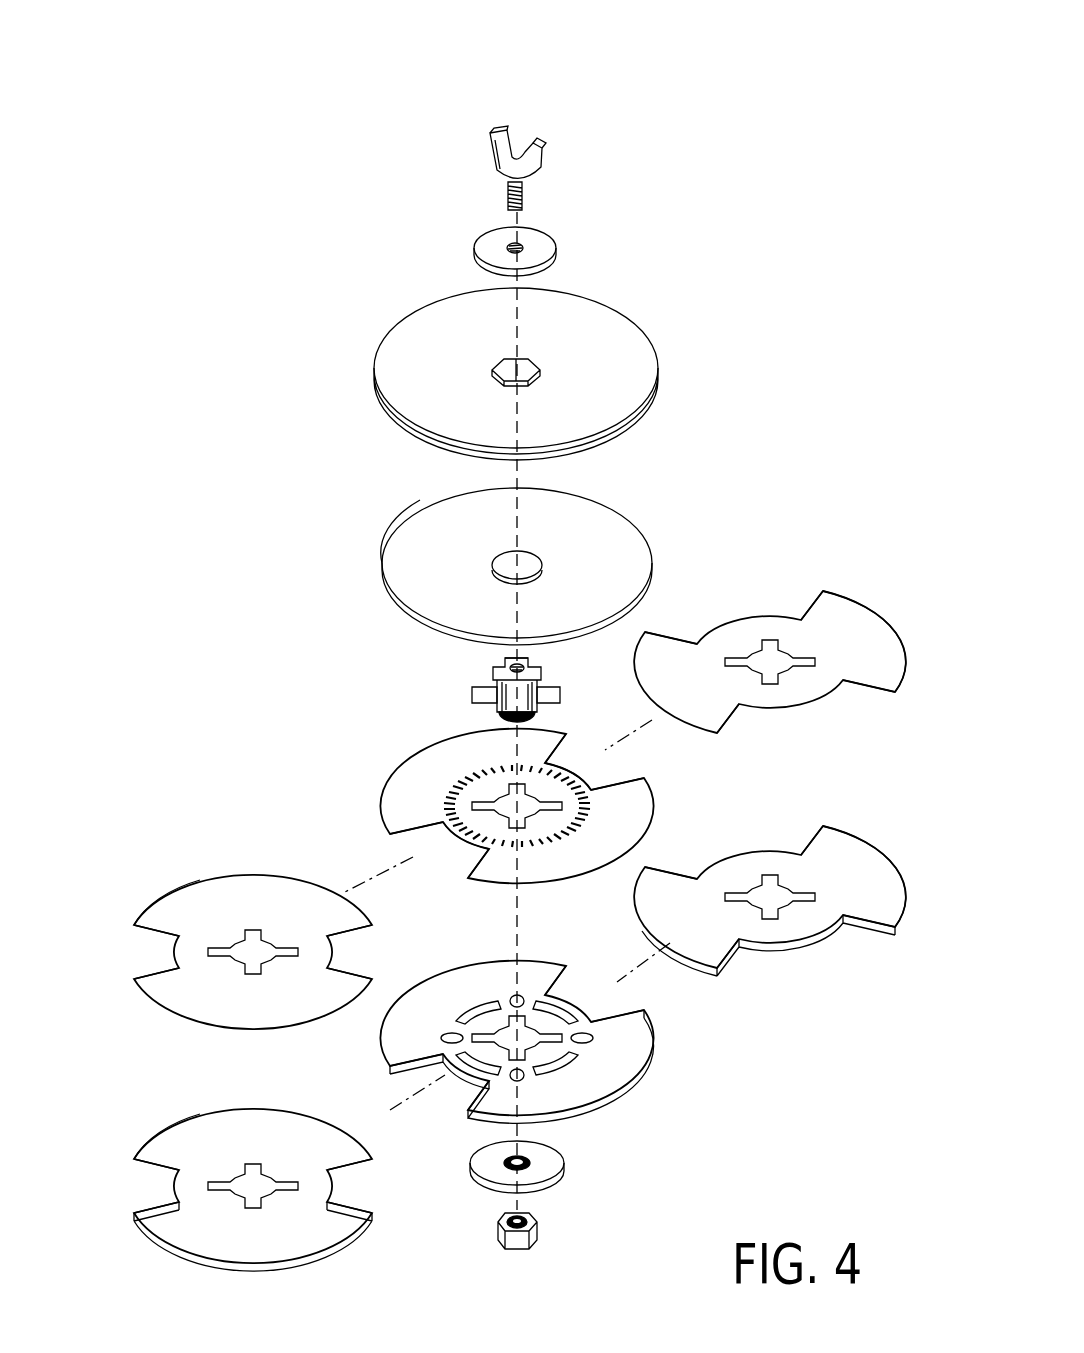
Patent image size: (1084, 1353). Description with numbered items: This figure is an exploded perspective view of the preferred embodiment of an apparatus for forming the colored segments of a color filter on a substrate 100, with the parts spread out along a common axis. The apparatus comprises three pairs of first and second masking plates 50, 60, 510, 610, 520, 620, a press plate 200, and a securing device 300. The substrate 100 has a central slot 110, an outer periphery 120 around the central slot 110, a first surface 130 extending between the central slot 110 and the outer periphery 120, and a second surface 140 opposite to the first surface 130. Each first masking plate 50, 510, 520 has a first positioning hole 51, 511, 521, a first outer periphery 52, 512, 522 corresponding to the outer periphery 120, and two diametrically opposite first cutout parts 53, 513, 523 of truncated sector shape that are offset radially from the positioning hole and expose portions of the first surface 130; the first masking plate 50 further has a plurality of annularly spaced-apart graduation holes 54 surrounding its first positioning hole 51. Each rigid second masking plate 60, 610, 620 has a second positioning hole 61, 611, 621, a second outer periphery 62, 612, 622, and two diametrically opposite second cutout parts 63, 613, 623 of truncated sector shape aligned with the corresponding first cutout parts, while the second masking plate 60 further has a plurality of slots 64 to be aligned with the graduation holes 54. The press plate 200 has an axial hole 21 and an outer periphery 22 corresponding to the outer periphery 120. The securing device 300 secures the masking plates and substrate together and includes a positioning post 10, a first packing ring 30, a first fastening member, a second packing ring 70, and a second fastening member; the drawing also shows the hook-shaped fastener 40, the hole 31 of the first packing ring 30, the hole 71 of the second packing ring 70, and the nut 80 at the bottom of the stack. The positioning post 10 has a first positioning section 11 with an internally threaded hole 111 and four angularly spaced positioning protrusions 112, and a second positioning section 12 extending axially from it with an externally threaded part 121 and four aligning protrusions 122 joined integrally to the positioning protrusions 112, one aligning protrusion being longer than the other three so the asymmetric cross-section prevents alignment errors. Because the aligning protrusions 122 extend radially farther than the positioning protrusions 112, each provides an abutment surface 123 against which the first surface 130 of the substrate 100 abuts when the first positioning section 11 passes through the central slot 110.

The securing device 300 is at (489, 104).
The hook 40 is at (530, 123).
The first packing ring 30 is at (536, 237).
The washer hole 31 is at (515, 248).
The press plate 200 is at (553, 373).
The axial hole 21 is at (498, 363).
The outer periphery 22 is at (660, 372).
The substrate 100 is at (488, 547).
The central slot 110 is at (498, 555).
The outer periphery 120 is at (605, 508).
The first surface 130 is at (406, 613).
The second surface 140 is at (408, 568).
The positioning post 10 is at (509, 663).
The first positioning section 11 is at (535, 660).
The internally threaded hole 111 is at (496, 660).
The positioning protrusions 112 is at (488, 670).
The abutment surface 123 is at (474, 690).
The aligning protrusions 122 is at (560, 698).
The externally threaded part 121 is at (500, 712).
The second positioning section 12 is at (540, 712).
The first masking plate 50 is at (467, 834).
The first positioning hole 51 is at (498, 800).
The first outer periphery 52 is at (378, 810).
The first cutout parts 53 is at (590, 778).
The graduation holes 54 is at (460, 838).
The first masking plate 510 is at (250, 899).
The first positioning hole 511 is at (245, 948).
The first outer periphery 512 is at (136, 906).
The first cutout parts 513 is at (148, 955).
The first masking plate 520 is at (789, 606).
The first positioning hole 521 is at (778, 655).
The first outer periphery 522 is at (892, 625).
The first cutout parts 523 is at (732, 617).
The second masking plate 620 is at (788, 895).
The second positioning hole 621 is at (774, 893).
The second outer periphery 622 is at (830, 850).
The second cutout parts 623 is at (705, 862).
The second masking plate 60 is at (553, 1054).
The second positioning hole 61 is at (542, 1050).
The second outer periphery 62 is at (640, 1100).
The second cutout parts 63 is at (604, 1008).
The slots 64 is at (500, 1000).
The second masking plate 610 is at (258, 1138).
The second positioning hole 611 is at (245, 1185).
The second outer periphery 612 is at (138, 1140).
The second cutout parts 613 is at (150, 1190).
The second packing ring 70 is at (560, 1221).
The washer hole 71 is at (535, 1163).
The nut 80 is at (488, 1252).